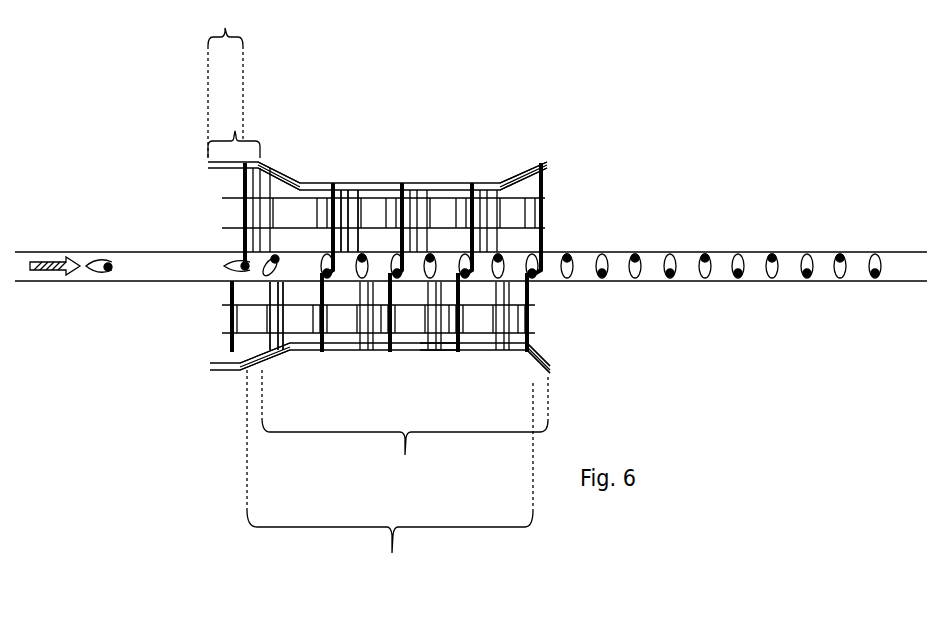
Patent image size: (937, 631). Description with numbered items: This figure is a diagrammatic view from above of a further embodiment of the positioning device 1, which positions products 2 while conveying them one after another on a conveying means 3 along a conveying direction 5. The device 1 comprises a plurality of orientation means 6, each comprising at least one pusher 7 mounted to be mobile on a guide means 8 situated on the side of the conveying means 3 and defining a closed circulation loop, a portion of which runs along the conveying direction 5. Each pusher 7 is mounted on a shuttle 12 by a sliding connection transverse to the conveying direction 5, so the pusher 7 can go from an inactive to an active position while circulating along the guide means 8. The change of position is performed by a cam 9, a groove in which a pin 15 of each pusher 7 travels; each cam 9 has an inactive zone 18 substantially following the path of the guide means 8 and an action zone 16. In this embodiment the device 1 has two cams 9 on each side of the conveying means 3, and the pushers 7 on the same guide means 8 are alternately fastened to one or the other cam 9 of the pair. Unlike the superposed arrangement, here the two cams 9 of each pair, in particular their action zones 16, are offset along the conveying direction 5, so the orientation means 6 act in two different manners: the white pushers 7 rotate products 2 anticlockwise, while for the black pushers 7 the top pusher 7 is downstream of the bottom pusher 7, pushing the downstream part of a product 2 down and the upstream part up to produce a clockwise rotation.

The positioning device 1 is at (582, 389).
The products 2 is at (707, 257).
The conveying means 3 is at (162, 297).
The conveying direction 5 is at (49, 258).
The orientation means 6 is at (334, 180).
The pusher 7 is at (545, 245).
The guide means 8 is at (256, 323).
The cam 9 is at (523, 162).
The shuttle 12 is at (286, 327).
The pin 15 is at (438, 351).
The action zone 16 is at (397, 474).
The inactive zone 18 is at (234, 80).